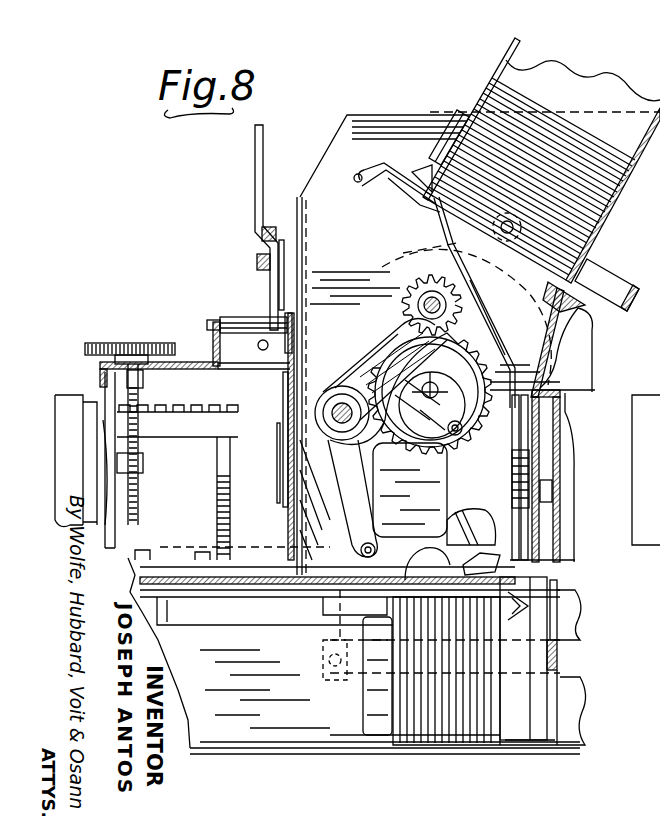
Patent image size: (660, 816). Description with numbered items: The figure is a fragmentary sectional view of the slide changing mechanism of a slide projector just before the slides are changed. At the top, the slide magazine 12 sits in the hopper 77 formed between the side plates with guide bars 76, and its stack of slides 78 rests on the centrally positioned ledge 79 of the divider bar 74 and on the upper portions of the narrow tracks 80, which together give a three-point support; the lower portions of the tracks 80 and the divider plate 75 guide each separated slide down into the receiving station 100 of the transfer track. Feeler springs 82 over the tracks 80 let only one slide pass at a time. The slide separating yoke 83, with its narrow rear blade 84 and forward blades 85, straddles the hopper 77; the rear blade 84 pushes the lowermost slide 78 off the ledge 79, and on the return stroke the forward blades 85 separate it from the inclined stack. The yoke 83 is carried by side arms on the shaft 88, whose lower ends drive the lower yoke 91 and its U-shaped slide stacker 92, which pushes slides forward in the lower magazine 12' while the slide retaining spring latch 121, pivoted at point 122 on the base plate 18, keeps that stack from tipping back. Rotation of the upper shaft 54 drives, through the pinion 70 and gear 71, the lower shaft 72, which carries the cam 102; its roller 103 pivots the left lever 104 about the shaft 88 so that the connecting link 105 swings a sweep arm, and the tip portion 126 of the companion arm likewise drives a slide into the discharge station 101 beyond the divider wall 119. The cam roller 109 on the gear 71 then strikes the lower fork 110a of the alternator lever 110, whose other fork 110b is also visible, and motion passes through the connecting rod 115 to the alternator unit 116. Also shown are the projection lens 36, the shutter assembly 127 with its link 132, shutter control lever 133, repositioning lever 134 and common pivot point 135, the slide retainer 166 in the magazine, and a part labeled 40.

The slide magazine 12 is at (471, 119).
The lower slide magazine 12' is at (608, 667).
The slide transfer base plate 18 is at (262, 594).
The projection lens 36 is at (654, 395).
The adjusting gear 40 is at (132, 340).
The upper shaft 54 is at (396, 260).
The pinion 70 is at (412, 255).
The gear 71 is at (490, 330).
The lower shaft 72 is at (368, 362).
The divider bar 74 is at (594, 330).
The divider plate 75 is at (590, 388).
The guide bar 76 is at (452, 128).
The hopper 77 is at (612, 92).
The slide 78 is at (565, 82).
The ledge 79 is at (545, 292).
The track 80 is at (440, 238).
The feeler spring 82 is at (420, 178).
The slide separating yoke 83 is at (600, 262).
The rear blade 84 is at (614, 278).
The forward blade 85 is at (405, 203).
The shaft 88 is at (316, 417).
The lower yoke 91 is at (565, 636).
The slide stacker 92 is at (520, 730).
The receiving station 100 is at (540, 420).
The discharge station 101 is at (566, 540).
The cam 102 is at (470, 420).
The roller 103 is at (418, 440).
The left lever 104 is at (385, 488).
The connecting link 105 is at (262, 548).
The cam roller 109 is at (412, 340).
The alternator lever 110 is at (320, 392).
The lower fork 110a is at (556, 330).
The lever arm 110b is at (380, 360).
The connecting rod 115 is at (460, 540).
The alternator unit 116 is at (500, 466).
The divider wall 119 is at (560, 440).
The slide retaining spring latch 121 is at (565, 610).
The pivot point 122 is at (452, 562).
The tip portion 126 is at (552, 492).
The shutter assembly 127 is at (275, 478).
The link 132 is at (275, 390).
The shutter control lever 133 is at (255, 175).
The repositioning lever 134 is at (258, 258).
The common pivot point 135 is at (212, 318).
The slide retainer 166 is at (362, 708).